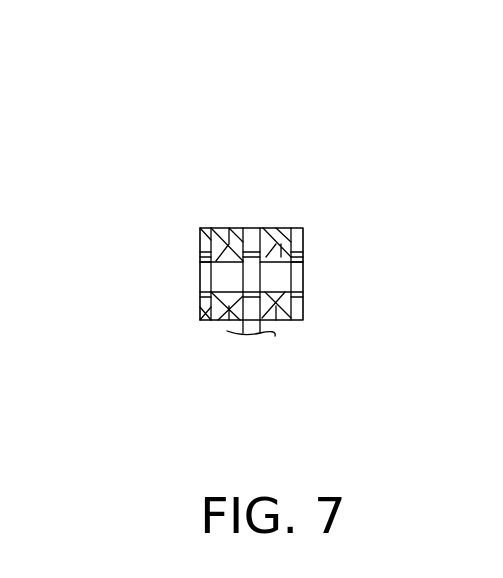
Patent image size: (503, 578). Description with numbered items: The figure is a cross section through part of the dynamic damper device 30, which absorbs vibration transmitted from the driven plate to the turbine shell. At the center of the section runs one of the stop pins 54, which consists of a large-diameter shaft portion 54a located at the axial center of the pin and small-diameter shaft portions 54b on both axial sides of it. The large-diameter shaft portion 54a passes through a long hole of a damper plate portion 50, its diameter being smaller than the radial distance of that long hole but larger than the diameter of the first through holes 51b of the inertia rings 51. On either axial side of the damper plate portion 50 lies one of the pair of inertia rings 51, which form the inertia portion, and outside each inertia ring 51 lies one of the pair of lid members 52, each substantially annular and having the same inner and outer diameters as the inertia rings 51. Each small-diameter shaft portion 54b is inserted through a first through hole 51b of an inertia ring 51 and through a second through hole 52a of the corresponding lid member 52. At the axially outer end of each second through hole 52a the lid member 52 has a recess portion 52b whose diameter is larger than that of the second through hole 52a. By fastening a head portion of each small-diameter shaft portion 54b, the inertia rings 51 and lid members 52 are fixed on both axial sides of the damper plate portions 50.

The dynamic damper device 30 is at (357, 142).
The damper plate portion 50 is at (247, 228).
The inertia ring 51 is at (230, 228).
The first through hole 51b is at (219, 250).
The lid member 52 is at (203, 320).
The second through hole 52a is at (201, 287).
The recess portion 52b is at (200, 268).
The stop pin 54 is at (305, 272).
The large-diameter shaft portion 54a is at (247, 302).
The small-diameter shaft portion 54b is at (285, 276).